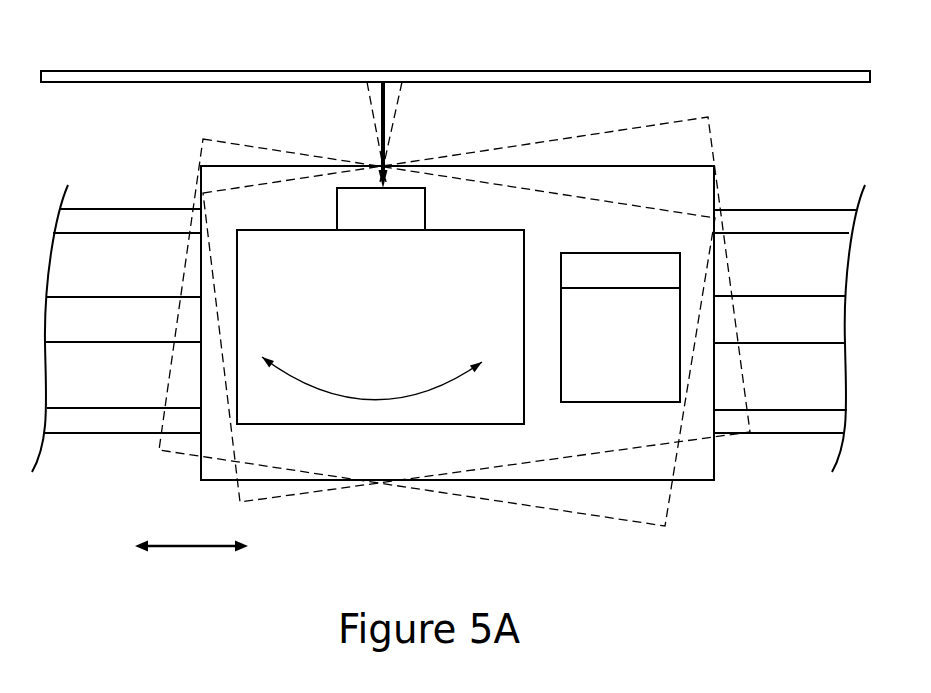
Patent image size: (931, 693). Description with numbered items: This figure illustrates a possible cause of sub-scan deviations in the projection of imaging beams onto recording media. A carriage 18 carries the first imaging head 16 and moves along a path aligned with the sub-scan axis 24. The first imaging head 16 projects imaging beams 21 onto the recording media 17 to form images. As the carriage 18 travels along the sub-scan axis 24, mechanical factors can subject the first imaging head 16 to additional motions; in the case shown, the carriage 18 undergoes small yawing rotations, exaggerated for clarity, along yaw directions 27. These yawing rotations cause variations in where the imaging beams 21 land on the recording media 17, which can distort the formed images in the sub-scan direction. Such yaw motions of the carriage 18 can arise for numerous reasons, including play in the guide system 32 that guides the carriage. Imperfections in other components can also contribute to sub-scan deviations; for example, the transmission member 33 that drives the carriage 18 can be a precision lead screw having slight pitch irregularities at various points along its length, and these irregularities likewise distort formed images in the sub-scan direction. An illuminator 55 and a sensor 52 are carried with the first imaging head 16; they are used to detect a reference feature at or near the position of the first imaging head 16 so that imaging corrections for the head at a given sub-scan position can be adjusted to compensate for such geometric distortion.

The recording media 17 is at (170, 71).
The imaging beams 21 is at (381, 117).
The first imaging head 16 is at (292, 293).
The carriage 18 is at (683, 232).
The illuminator 55 is at (612, 337).
The sensor 52 is at (635, 272).
The transmission member 33 is at (130, 318).
The guide system 32 is at (790, 220).
The yaw directions 27 is at (370, 402).
The sub-scan axis 24 is at (177, 548).